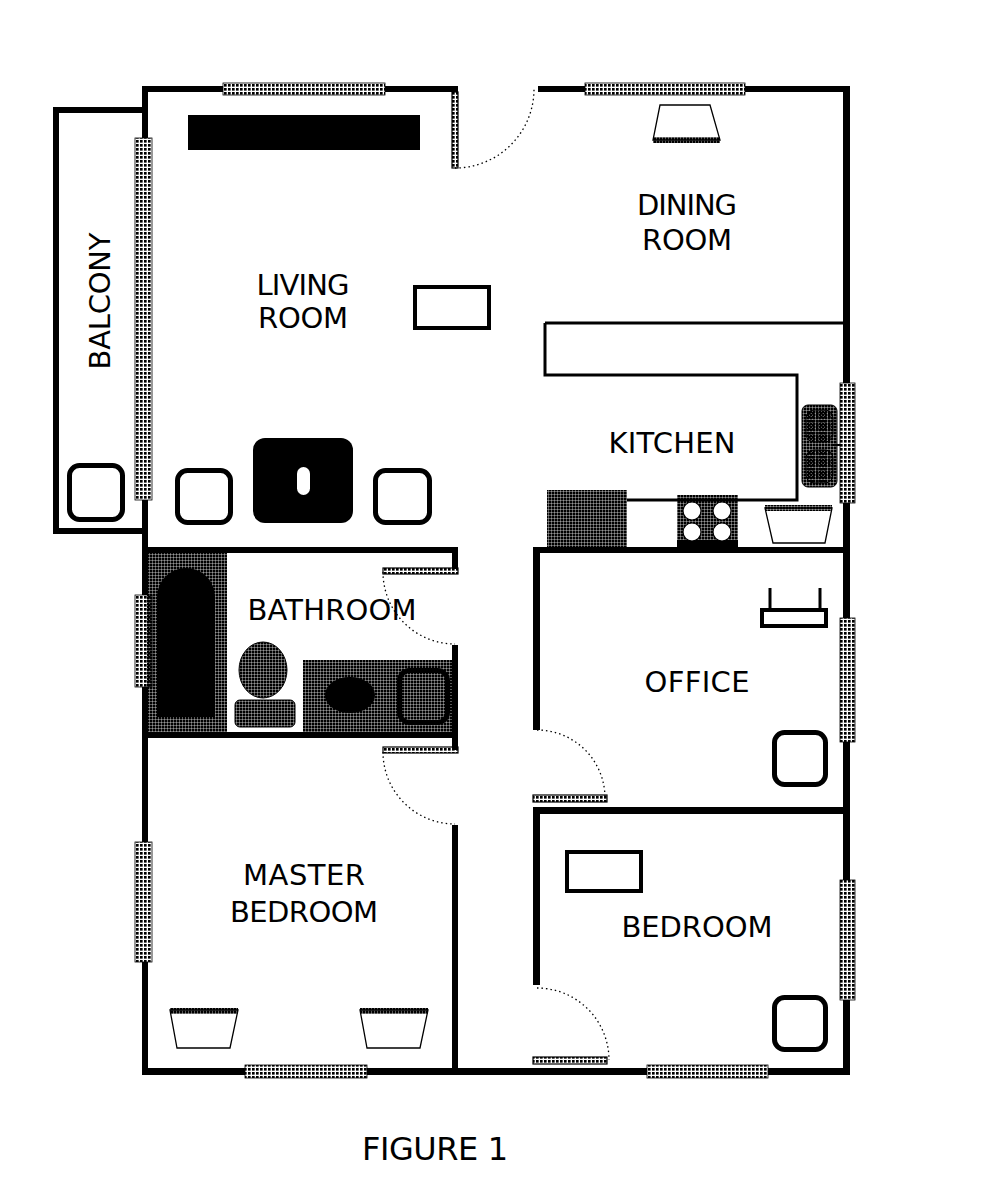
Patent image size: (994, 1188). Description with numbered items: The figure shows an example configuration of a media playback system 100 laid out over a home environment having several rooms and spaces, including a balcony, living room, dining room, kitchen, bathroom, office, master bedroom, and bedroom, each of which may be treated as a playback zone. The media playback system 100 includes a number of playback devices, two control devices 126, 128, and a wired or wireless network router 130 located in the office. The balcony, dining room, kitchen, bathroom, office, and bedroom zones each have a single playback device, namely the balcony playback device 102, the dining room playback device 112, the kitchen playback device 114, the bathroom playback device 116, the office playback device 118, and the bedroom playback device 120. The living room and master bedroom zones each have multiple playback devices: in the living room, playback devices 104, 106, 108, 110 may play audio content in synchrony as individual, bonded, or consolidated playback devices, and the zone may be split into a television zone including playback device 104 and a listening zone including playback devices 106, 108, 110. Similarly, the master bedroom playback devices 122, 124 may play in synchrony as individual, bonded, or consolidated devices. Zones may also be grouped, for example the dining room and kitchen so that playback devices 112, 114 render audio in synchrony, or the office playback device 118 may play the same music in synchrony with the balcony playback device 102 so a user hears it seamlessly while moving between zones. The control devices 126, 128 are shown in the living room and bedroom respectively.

The media playback system 100 is at (548, 58).
The playback device 102 is at (78, 504).
The playback device 104 is at (286, 140).
The playback device 106 is at (186, 508).
The playback device 108 is at (385, 508).
The playback device 110 is at (285, 464).
The playback device 112 is at (668, 133).
The playback device 114 is at (780, 537).
The playback device 116 is at (407, 708).
The playback device 118 is at (782, 770).
The playback device 120 is at (782, 1035).
The playback device 122 is at (186, 1041).
The playback device 124 is at (376, 1041).
The control device 126 is at (434, 320).
The control device 128 is at (586, 884).
The wired or wireless network router 130 is at (758, 620).